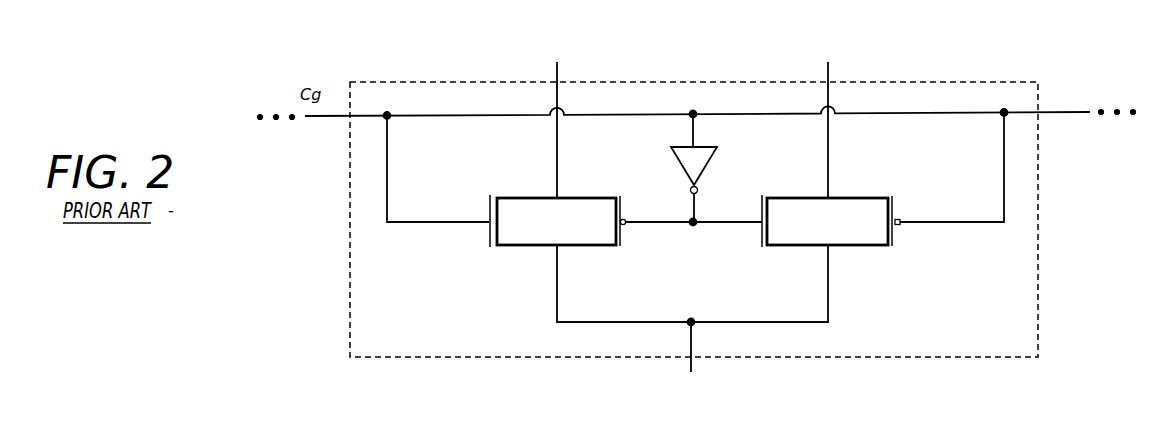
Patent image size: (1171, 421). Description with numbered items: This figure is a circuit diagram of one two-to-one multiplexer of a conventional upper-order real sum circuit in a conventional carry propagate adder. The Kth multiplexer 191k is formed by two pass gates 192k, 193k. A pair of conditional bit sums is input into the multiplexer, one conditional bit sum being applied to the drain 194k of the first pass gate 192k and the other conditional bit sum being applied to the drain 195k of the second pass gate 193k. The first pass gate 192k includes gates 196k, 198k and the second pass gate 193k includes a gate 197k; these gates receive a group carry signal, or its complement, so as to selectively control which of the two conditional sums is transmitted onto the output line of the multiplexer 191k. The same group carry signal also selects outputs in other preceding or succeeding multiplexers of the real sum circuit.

The Kth multiplexer 191k is at (350, 290).
The pass gate 192k is at (574, 268).
The pass gate 193k is at (852, 266).
The drain 194k is at (557, 157).
The drain 195k is at (828, 160).
The gate 196k is at (440, 221).
The gate 197k is at (949, 219).
The gate 198k is at (697, 331).